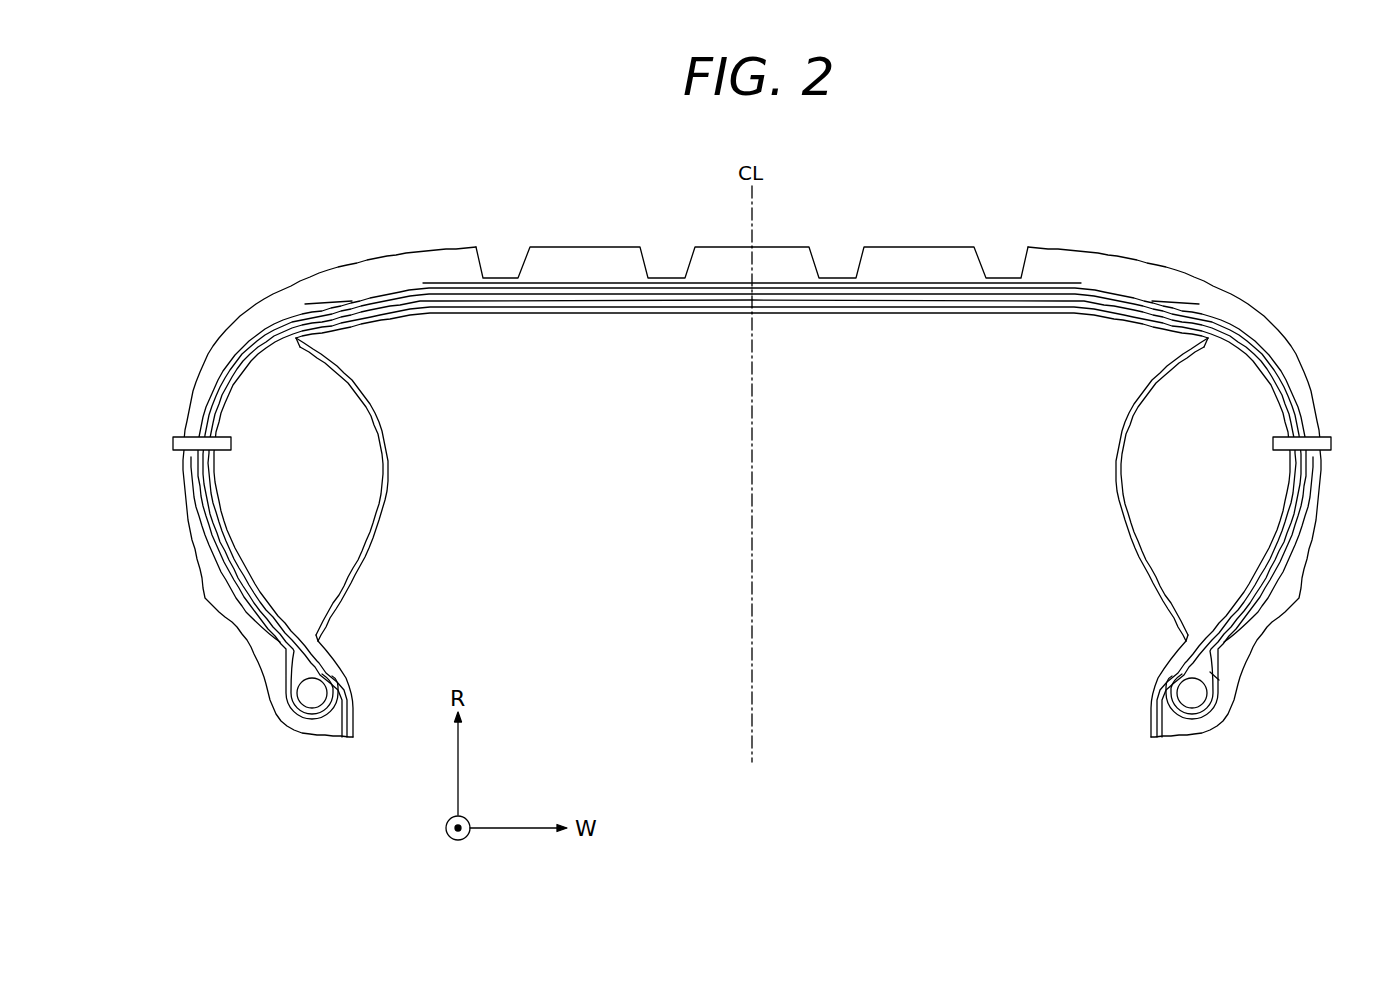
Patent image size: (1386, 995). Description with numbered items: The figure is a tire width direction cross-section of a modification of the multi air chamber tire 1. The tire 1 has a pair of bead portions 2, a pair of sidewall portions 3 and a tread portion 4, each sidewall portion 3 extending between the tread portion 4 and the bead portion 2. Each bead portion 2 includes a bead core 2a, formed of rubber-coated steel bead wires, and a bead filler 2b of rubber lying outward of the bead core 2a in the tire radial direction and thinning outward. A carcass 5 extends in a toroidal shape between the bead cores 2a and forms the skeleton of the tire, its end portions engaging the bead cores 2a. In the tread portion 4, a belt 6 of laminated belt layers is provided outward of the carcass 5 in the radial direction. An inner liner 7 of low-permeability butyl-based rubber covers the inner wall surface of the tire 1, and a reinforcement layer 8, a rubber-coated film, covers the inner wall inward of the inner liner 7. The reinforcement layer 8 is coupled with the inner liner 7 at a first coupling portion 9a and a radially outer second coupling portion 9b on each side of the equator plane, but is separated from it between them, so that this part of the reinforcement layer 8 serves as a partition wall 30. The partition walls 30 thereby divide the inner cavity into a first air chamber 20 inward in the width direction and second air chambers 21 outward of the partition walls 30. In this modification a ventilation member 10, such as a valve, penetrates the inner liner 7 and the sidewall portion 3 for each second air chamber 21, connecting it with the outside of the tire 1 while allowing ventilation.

The multi air chamber tire 1 is at (373, 183).
The bead portion 2 is at (248, 668).
The bead core 2a is at (1190, 694).
The bead filler 2b is at (1212, 665).
The sidewall portion 3 is at (184, 414).
The tread portion 4 is at (878, 240).
The carcass 5 is at (1232, 622).
The belt 6 is at (945, 283).
The inner liner 7 is at (272, 354).
The reinforcement layer 8 is at (383, 508).
The first coupling portion 9a is at (324, 641).
The second coupling portion 9b is at (300, 340).
The ventilation member 10 is at (175, 447).
The first air chamber 20 is at (680, 446).
The second air chamber 21 is at (332, 486).
The partition wall 30 is at (389, 437).